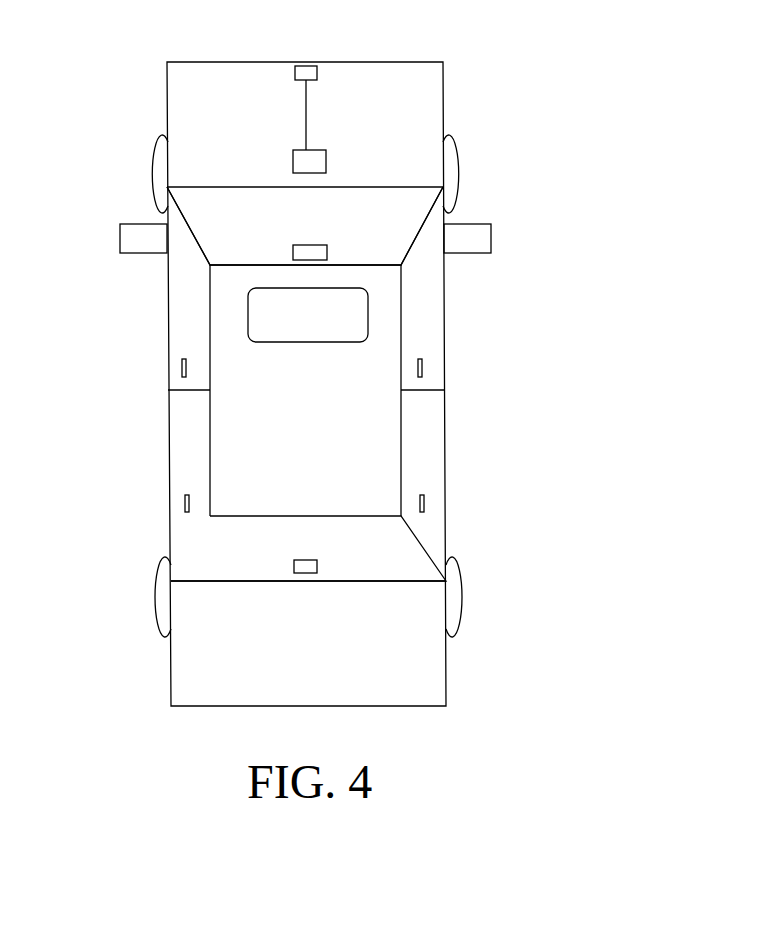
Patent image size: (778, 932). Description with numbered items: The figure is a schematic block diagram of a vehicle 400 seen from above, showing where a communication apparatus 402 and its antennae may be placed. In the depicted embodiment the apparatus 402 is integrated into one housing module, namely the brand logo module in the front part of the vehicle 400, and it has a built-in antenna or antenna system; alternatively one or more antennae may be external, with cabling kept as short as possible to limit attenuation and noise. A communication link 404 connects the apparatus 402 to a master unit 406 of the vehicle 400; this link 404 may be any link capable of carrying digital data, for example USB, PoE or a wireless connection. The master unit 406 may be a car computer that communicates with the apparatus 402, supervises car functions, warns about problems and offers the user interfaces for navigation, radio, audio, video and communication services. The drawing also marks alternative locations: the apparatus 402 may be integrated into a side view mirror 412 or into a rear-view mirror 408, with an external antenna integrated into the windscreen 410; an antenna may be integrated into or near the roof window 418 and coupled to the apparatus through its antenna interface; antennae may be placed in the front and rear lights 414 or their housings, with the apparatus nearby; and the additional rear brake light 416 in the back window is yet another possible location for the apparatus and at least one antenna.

The vehicle 400 is at (578, 63).
The apparatus 402 is at (318, 73).
The communication link 404 is at (308, 110).
The master unit 406 is at (326, 161).
The rear-view mirror 408 is at (327, 252).
The windscreen 410 is at (251, 245).
The side view mirror 412 is at (120, 240).
The front light and rear light 414 is at (167, 62).
The additional rear brake light 416 is at (318, 566).
The roof window 418 is at (312, 343).